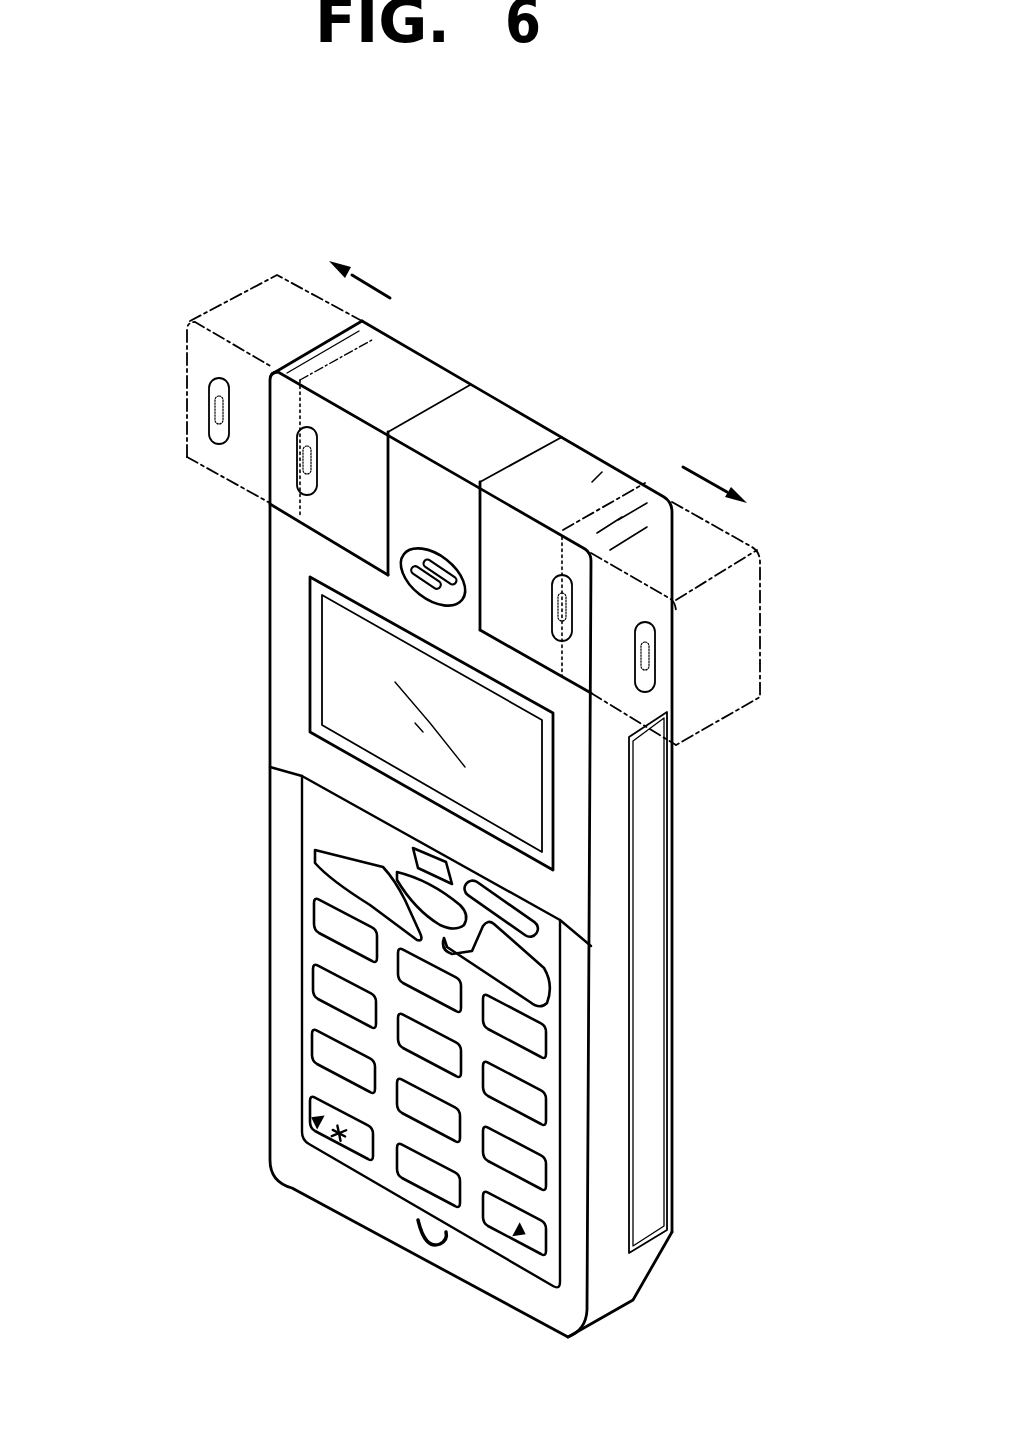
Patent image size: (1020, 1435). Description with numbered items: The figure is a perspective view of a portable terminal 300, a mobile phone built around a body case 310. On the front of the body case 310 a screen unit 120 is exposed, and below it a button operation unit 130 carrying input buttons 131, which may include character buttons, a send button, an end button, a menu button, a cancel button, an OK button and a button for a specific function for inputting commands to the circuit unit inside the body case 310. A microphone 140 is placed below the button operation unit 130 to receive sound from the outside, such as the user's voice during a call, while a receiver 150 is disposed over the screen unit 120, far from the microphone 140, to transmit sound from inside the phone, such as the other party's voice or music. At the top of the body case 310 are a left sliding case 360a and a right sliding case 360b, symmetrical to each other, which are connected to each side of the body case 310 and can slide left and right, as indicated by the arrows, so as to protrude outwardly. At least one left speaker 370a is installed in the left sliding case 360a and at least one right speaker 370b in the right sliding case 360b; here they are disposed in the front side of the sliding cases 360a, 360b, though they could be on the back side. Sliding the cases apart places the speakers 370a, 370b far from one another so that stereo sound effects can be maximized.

The portable terminal 300 is at (168, 234).
The body case 310 is at (614, 857).
The screen unit 120 is at (350, 683).
The button operation unit 130 is at (270, 951).
The input buttons 131 is at (318, 857).
The microphone 140 is at (423, 1247).
The receiver 150 is at (402, 583).
The left sliding case 360a is at (343, 517).
The right sliding case 360b is at (590, 483).
The left speaker 370a is at (286, 485).
The right speaker 370b is at (546, 574).